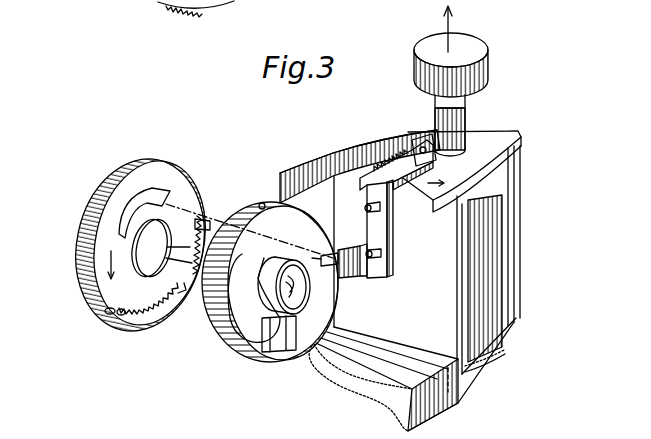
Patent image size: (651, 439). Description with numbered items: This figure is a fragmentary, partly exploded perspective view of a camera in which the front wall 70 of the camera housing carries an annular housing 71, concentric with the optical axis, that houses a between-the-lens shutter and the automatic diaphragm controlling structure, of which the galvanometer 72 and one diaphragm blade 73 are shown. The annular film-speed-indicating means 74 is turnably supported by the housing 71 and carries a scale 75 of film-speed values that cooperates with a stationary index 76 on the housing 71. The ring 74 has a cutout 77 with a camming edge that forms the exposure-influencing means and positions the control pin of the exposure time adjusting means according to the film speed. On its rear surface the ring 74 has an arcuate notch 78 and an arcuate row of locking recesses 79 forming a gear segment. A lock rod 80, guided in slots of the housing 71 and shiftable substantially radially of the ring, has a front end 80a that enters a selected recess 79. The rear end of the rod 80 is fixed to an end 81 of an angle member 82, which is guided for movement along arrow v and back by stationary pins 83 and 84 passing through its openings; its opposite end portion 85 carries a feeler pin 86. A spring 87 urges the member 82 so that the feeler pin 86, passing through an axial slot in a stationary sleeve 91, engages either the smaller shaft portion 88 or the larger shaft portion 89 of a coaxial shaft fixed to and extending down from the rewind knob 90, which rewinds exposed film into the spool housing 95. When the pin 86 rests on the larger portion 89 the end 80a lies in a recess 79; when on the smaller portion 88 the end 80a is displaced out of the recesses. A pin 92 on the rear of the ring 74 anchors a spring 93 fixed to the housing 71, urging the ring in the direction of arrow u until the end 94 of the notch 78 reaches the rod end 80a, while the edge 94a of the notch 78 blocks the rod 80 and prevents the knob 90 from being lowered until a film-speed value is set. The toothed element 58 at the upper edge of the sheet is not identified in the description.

The gear 58 is at (205, 5).
The front wall 70 is at (302, 178).
The annular housing 71 is at (240, 212).
The galvanometer 72 is at (282, 340).
The diaphragm blade 73 is at (240, 338).
The film-speed-indicating means 74 is at (103, 238).
The scale 75 is at (123, 181).
The stationary index 76 is at (262, 203).
The cutout 77 is at (148, 198).
The arcuate notch 78 is at (198, 215).
The recesses 79 is at (159, 248).
The lock rod 80 is at (338, 268).
The front end of lock rod 80a is at (203, 217).
The end of angle member 81 is at (346, 250).
The angle member 82 is at (390, 198).
The stationary pin 83 is at (380, 209).
The stationary pin 84 is at (381, 254).
The end portion 85 is at (378, 168).
The feeler pin 86 is at (416, 142).
The spring 87 is at (356, 150).
The shaft portion 88 is at (470, 136).
The shaft portion 89 is at (462, 115).
The knob 90 is at (467, 44).
The sleeve 91 is at (467, 127).
The pin 92 is at (107, 315).
The spring 93 is at (123, 316).
The end of arcuate notch 94 is at (160, 312).
The edge of notch 94a is at (182, 297).
The spool housing 95 is at (503, 211).